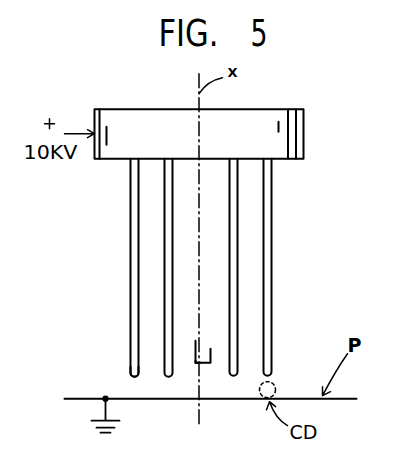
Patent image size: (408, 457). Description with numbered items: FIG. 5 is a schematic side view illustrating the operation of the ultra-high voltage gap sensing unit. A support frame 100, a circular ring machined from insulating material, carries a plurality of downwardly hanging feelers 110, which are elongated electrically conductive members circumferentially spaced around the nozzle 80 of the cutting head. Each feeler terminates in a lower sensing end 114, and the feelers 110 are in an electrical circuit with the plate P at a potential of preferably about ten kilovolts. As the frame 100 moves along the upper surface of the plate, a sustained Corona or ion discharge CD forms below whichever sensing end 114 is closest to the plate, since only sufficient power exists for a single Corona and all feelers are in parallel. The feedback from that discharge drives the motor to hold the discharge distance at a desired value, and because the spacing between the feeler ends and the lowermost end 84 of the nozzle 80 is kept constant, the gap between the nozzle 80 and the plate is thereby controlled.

The support frame 100 is at (304, 117).
The feelers 110 is at (156, 255).
The sensing end 114 is at (113, 378).
The nozzle 80 is at (211, 346).
The lowermost end 84 is at (197, 362).